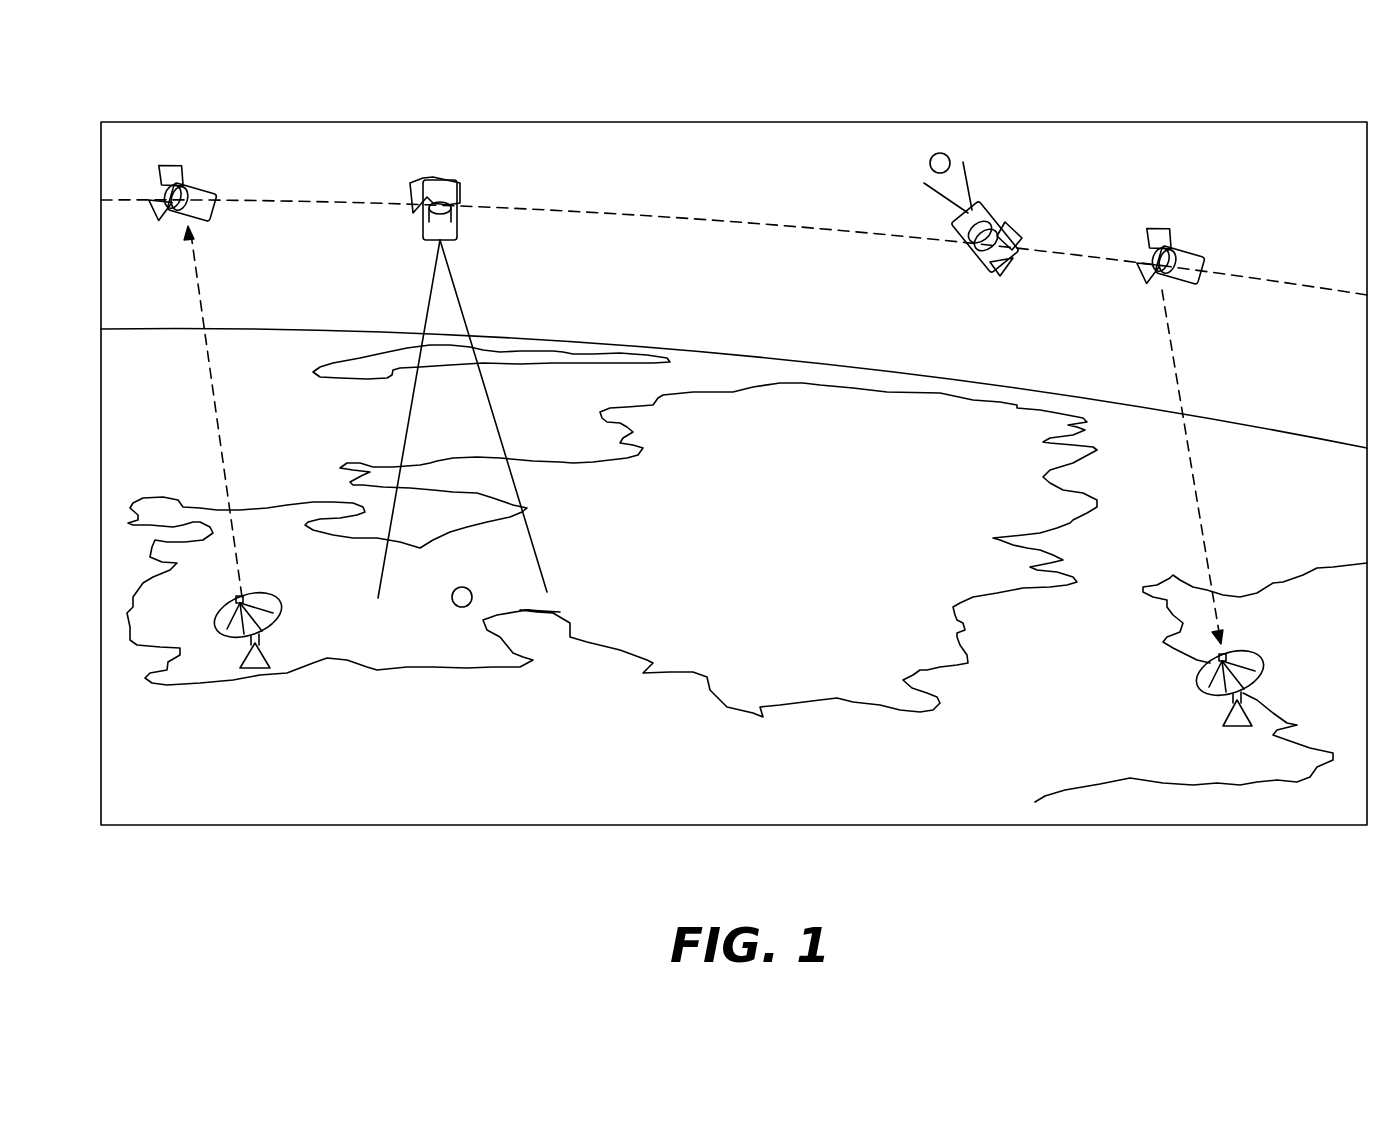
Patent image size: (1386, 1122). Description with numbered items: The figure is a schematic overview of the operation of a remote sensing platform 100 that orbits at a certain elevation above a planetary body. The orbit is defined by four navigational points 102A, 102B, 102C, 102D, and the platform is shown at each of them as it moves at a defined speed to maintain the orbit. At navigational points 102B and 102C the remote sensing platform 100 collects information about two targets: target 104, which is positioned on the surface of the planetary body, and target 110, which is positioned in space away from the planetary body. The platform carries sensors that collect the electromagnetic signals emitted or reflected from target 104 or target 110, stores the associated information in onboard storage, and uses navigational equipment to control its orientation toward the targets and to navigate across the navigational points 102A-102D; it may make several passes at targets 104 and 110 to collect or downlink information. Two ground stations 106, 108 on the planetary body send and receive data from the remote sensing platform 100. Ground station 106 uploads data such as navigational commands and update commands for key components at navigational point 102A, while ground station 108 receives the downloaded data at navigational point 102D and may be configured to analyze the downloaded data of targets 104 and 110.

The remote sensing platform 100 is at (717, 171).
The navigational point 102A is at (184, 150).
The navigational point 102B is at (433, 142).
The navigational point 102C is at (996, 170).
The navigational point 102D is at (1171, 183).
The target 104 is at (460, 601).
The ground station 106 is at (263, 669).
The ground station 108 is at (1237, 727).
The target 110 is at (937, 152).